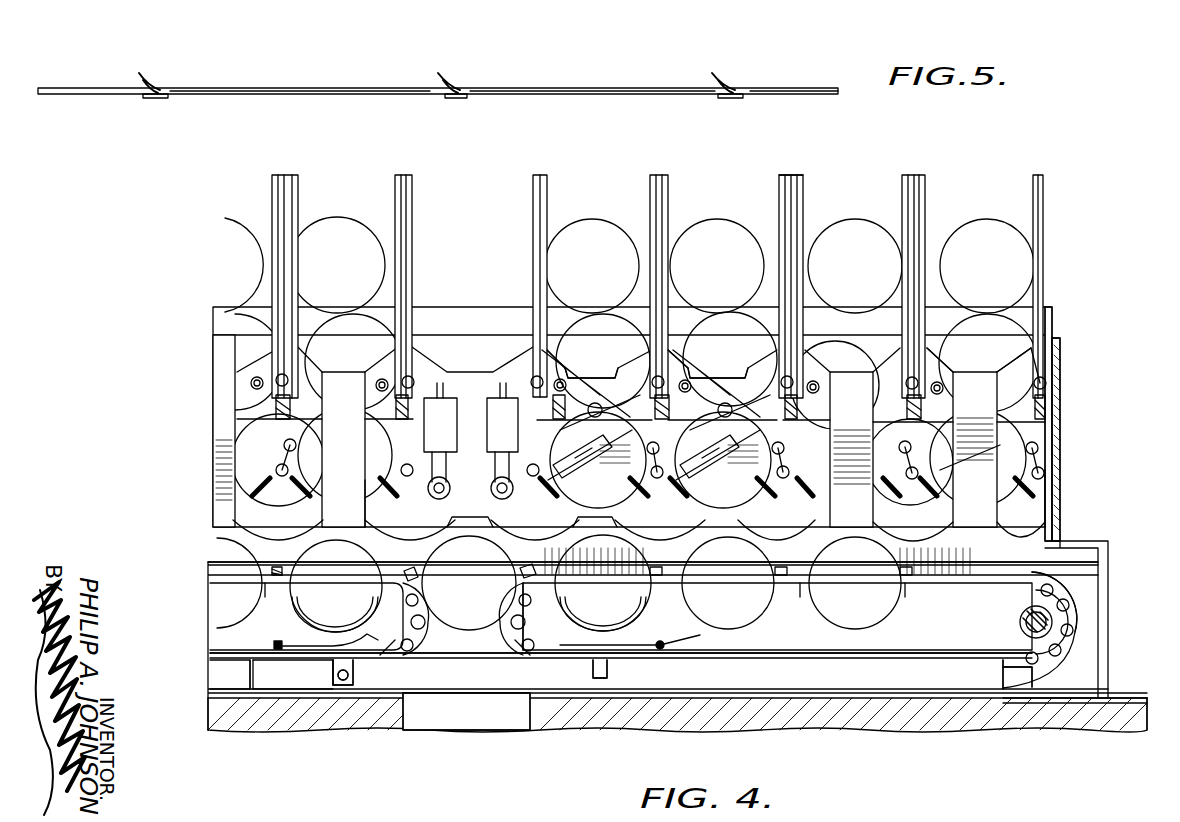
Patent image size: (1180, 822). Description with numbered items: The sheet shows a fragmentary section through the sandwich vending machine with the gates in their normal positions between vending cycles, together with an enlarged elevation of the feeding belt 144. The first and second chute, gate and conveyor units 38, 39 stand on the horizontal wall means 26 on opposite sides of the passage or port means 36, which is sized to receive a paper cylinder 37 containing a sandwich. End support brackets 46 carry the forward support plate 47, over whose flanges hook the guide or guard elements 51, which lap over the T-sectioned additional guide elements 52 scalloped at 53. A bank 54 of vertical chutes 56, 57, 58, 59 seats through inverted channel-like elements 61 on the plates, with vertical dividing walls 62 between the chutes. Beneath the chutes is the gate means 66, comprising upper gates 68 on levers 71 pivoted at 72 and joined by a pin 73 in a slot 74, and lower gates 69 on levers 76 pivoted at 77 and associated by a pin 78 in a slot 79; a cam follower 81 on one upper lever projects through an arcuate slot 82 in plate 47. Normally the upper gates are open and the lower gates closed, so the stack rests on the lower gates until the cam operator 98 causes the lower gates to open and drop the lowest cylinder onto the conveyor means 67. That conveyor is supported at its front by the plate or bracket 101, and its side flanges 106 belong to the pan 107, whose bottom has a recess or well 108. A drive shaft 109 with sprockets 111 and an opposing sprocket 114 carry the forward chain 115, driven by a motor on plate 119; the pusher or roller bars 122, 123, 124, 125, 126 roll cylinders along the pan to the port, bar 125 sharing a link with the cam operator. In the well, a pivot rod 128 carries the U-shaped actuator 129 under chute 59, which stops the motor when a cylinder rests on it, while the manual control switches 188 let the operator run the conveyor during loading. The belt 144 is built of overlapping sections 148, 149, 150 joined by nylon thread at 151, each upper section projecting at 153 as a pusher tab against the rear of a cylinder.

In FIG. 5, the belt 144 is at (319, 84).
In FIG. 5, the belt section 148 is at (238, 88).
In FIG. 5, the belt section 149 is at (597, 88).
In FIG. 5, the belt section 150 is at (806, 88).
In FIG. 5, the joint 151 is at (722, 99).
In FIG. 5, the pusher tab 153 is at (716, 78).
In FIG. 4, the horizontal wall means 26 is at (568, 720).
In FIG. 4, the passage or port means 36 is at (465, 720).
In FIG. 4, the paper cylinder 37 is at (770, 600).
In FIG. 4, the chute, gate and conveyor unit 38 is at (845, 348).
In FIG. 4, the chute, gate and conveyor unit 39 is at (237, 348).
In FIG. 4, the end support bracket 46 is at (1060, 442).
In FIG. 4, the forward support plate 47 is at (412, 500).
In FIG. 4, the guide or guard element 51 is at (1025, 378).
In FIG. 4, the additional guide or guard element 52 is at (495, 616).
In FIG. 4, the scallop 53 is at (840, 530).
In FIG. 4, the bank of chutes 54 is at (804, 175).
In FIG. 4, the vertical chute 56 is at (985, 192).
In FIG. 4, the vertical chute 57 is at (855, 192).
In FIG. 4, the vertical chute 58 is at (720, 192).
In FIG. 4, the vertical chute 59 is at (620, 212).
In FIG. 4, the inverted channel-like element 61 is at (1052, 322).
In FIG. 4, the vertical dividing wall 62 is at (1040, 175).
In FIG. 4, the gate means 66 is at (808, 498).
In FIG. 4, the conveyor means 67 is at (518, 652).
In FIG. 4, the upper gate 68 is at (1046, 410).
In FIG. 4, the lower gate 69 is at (900, 492).
In FIG. 4, the lever 71 is at (718, 395).
In FIG. 4, the pivot 72 is at (1046, 385).
In FIG. 4, the pin 73 is at (665, 418).
In FIG. 4, the slot 74 is at (703, 420).
In FIG. 4, the lever 76 is at (950, 462).
In FIG. 4, the pivot 77 is at (1046, 473).
In FIG. 4, the pin 78 is at (732, 450).
In FIG. 4, the slot 79 is at (637, 462).
In FIG. 4, the cam follower 81 is at (1035, 380).
In FIG. 4, the arcuate slot 82 is at (935, 372).
In FIG. 4, the cam operator or actuator 98 is at (510, 578).
In FIG. 4, the plate or bracket 101 is at (935, 689).
In FIG. 4, the side flange 106 is at (1012, 590).
In FIG. 4, the pan 107 is at (930, 650).
In FIG. 4, the recess or well 108 is at (990, 660).
In FIG. 4, the drive shaft 109 is at (1052, 618).
In FIG. 4, the sprocket 111 is at (1046, 626).
In FIG. 4, the sprocket 114 is at (428, 622).
In FIG. 4, the forward chain 115 is at (425, 645).
In FIG. 4, the plate 119 is at (1020, 700).
In FIG. 4, the pusher or roller bar 122 is at (910, 588).
In FIG. 4, the pusher or roller bar 123 is at (805, 588).
In FIG. 4, the pusher or roller bar 124 is at (418, 577).
In FIG. 4, the pusher or roller bar 125 is at (340, 668).
In FIG. 4, the pusher or roller bar 126 is at (607, 670).
In FIG. 4, the pivot rod 128 is at (278, 652).
In FIG. 4, the U-shaped actuator 129 is at (580, 640).
In FIG. 4, the manual control switch 188 is at (450, 430).